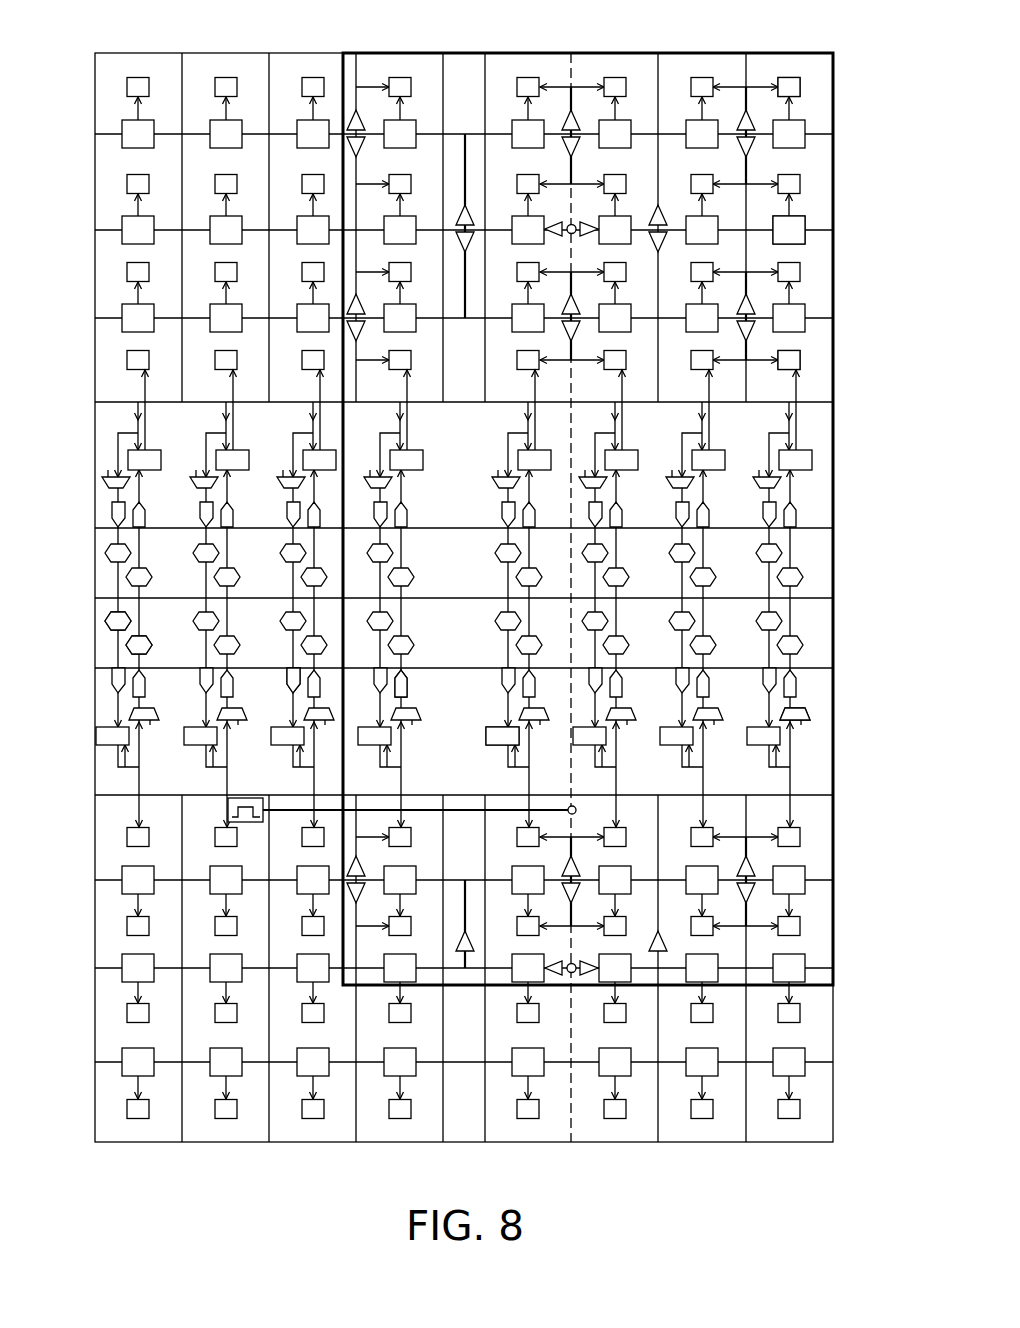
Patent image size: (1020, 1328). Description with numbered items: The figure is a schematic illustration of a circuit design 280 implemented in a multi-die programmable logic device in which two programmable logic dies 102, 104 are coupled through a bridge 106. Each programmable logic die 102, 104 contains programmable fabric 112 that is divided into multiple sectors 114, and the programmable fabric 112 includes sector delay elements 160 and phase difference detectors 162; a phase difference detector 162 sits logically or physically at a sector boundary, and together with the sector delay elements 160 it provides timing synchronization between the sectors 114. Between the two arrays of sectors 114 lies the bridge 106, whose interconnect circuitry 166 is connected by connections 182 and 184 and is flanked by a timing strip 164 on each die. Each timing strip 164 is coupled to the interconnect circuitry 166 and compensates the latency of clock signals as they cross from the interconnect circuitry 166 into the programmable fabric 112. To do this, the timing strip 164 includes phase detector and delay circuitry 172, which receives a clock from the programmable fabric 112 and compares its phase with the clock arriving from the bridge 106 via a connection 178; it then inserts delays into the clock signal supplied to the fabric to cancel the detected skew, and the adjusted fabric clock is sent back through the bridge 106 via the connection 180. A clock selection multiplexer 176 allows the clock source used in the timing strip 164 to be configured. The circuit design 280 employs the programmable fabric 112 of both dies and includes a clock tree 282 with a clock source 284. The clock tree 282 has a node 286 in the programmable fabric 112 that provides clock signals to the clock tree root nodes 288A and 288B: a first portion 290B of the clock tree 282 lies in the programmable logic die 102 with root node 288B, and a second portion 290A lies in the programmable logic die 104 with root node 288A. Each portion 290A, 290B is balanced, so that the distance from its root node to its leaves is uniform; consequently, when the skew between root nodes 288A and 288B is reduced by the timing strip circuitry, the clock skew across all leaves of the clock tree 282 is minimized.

The programmable logic die 102 is at (63, 103).
The programmable logic die 104 is at (64, 1066).
The bridge 106 is at (88, 525).
The programmable fabric 112 is at (95, 270).
The sector 114 is at (820, 100).
The sector delay element 160 is at (790, 348).
The phase difference detector 162 is at (795, 218).
The timing strip 164 is at (833, 462).
The interconnect circuitry 166 is at (833, 585).
The phase detector and delay circuitry 172 is at (483, 740).
The clock selection multiplexer 176 is at (810, 712).
The connection 178 is at (288, 690).
The connection 180 is at (410, 690).
The connection 182 is at (128, 620).
The connection 184 is at (152, 645).
The circuit design 280 is at (700, 53).
The clock tree 282 is at (571, 421).
The clock source 284 is at (248, 798).
The node 286 is at (570, 806).
The clock tree root node 288A is at (574, 982).
The clock tree root node 288B is at (573, 224).
The second portion of the clock tree 290A is at (643, 965).
The first portion of the clock tree 290B is at (660, 292).